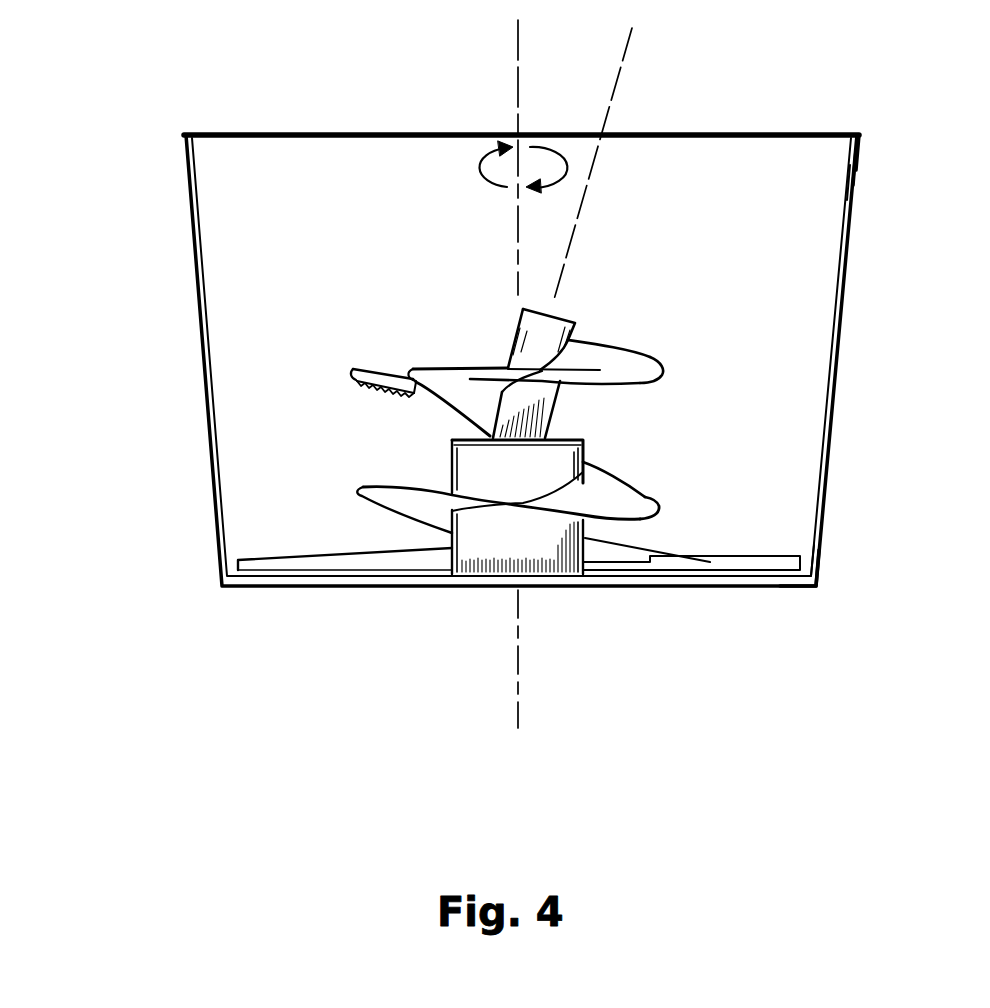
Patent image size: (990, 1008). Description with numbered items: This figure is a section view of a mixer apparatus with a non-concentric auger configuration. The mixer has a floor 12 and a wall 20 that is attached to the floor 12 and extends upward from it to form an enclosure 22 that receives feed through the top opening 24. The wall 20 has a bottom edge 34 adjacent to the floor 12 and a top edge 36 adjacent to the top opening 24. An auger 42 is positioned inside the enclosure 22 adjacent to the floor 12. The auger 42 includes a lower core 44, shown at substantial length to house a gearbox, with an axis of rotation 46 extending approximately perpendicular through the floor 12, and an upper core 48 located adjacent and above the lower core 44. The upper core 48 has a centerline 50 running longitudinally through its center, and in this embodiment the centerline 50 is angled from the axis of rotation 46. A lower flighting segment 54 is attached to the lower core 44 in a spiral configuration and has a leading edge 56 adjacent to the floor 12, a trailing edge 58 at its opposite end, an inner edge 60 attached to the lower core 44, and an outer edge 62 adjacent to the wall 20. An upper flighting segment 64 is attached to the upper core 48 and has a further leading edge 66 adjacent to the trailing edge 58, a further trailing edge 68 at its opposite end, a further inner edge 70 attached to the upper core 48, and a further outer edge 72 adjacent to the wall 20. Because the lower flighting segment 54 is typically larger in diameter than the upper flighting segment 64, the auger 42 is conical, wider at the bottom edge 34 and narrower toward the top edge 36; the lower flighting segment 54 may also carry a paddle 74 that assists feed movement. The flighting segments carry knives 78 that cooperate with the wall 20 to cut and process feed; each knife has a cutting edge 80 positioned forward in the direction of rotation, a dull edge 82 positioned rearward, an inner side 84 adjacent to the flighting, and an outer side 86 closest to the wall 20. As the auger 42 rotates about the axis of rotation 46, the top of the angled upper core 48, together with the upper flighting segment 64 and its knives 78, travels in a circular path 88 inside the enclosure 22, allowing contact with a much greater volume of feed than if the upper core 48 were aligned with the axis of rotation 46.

The floor 12 is at (287, 587).
The wall 20 is at (835, 167).
The enclosure 22 is at (835, 187).
The top opening 24 is at (295, 131).
The bottom edge 34 is at (817, 591).
The top edge 36 is at (857, 133).
The auger 42 is at (542, 545).
The lower core 44 is at (480, 560).
The axis of rotation 46 is at (514, 683).
The upper core 48 is at (536, 333).
The centerline 50 is at (632, 48).
The lower flighting segment 54 is at (640, 550).
The leading edge 56 is at (815, 569).
The trailing edge 58 is at (588, 462).
The inner edge 60 is at (605, 483).
The outer edge 62 is at (662, 512).
The upper flighting segment 64 is at (447, 367).
The further leading edge 66 is at (440, 396).
The further trailing edge 68 is at (622, 350).
The further inner edge 70 is at (630, 363).
The further outer edge 72 is at (660, 377).
The paddle 74 is at (365, 562).
The knives 78 is at (353, 375).
The cutting edge 80 is at (370, 390).
The dull edge 82 is at (370, 368).
The inner side 84 is at (403, 390).
The outer side 86 is at (350, 370).
The circular path 88 is at (504, 168).